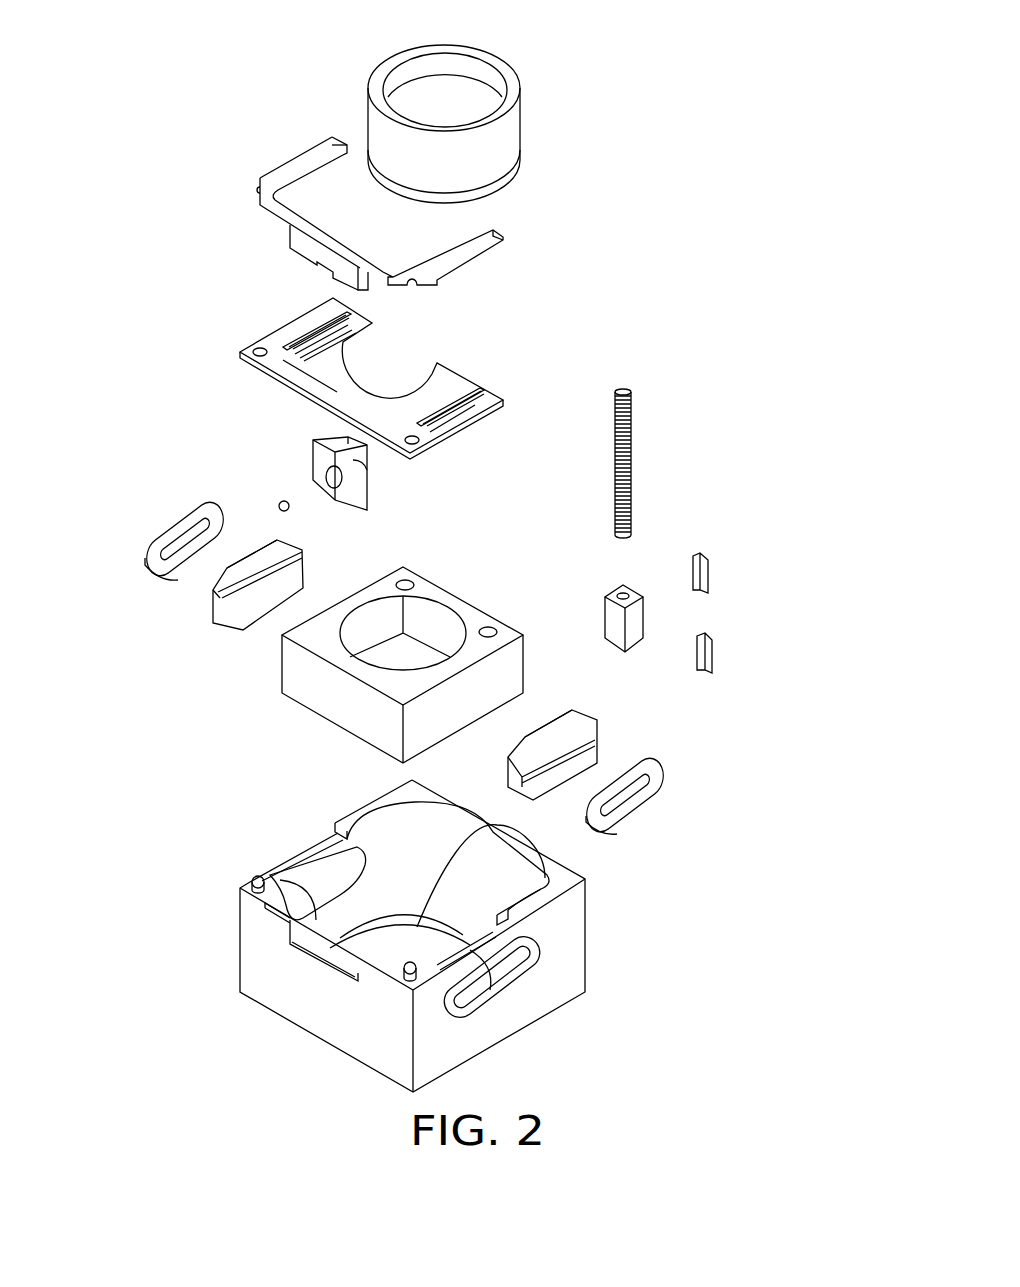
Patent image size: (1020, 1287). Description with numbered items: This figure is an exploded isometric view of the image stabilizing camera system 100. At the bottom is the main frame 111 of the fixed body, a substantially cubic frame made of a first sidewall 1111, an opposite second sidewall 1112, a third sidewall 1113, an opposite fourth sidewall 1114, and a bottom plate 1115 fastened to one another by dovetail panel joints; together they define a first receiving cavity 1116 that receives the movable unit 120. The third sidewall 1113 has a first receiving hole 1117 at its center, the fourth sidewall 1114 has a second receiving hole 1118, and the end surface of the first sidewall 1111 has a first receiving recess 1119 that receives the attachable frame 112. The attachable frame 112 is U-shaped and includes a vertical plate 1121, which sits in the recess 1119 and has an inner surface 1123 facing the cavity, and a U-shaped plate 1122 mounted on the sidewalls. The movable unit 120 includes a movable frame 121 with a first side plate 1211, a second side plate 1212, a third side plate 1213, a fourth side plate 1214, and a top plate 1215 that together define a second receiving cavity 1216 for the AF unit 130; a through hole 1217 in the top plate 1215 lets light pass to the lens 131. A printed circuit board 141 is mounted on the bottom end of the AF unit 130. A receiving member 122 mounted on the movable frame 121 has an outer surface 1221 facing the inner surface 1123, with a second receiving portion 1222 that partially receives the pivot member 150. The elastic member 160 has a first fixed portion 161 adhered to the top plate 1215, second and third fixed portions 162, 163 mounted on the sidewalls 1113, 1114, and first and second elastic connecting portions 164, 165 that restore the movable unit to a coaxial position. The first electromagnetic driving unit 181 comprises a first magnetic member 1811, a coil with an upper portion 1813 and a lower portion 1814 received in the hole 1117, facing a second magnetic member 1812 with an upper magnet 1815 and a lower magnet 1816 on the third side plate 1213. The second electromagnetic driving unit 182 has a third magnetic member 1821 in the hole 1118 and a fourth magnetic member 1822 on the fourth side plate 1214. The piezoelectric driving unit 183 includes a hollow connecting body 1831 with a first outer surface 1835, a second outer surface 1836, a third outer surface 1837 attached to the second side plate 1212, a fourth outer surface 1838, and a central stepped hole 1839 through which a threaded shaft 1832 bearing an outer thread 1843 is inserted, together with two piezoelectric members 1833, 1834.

The image stabilizing camera system 100 is at (677, 92).
The auto-focus (AF) unit 130 is at (512, 130).
The lens 131 is at (470, 95).
The printed circuit board 141 is at (512, 168).
The attachable frame 112 is at (355, 227).
The vertical plate 1121 is at (300, 238).
The U-shaped plate 1122 is at (290, 160).
The inner surface 1123 is at (372, 288).
The elastic member 160 is at (372, 374).
The first fixed portion 161 is at (348, 392).
The second fixed portion 162 is at (470, 398).
The third fixed portion 163 is at (300, 320).
The first elastic connecting portion 164 is at (430, 440).
The second elastic connecting portion 165 is at (275, 338).
The movable unit 120 is at (450, 462).
The movable frame 121 is at (350, 640).
The first side plate 1211 is at (305, 688).
The second side plate 1212 is at (470, 604).
The third side plate 1213 is at (458, 725).
The fourth side plate 1214 is at (282, 640).
The top plate 1215 is at (400, 660).
The second receiving cavity 1216 is at (385, 655).
The through hole 1217 is at (396, 578).
The receiving member 122 is at (376, 479).
The outer surface 1221 is at (352, 497).
The second receiving portion 1222 is at (327, 472).
The pivot member 150 is at (279, 505).
The second electromagnetic driving unit 182 is at (180, 567).
The third magnetic member 1821 is at (163, 575).
The fourth magnetic member 1822 is at (238, 614).
The piezoelectric driving unit 183 is at (675, 533).
The threaded shaft 1832 is at (670, 459).
The outer thread 1843 is at (634, 468).
The hollow connecting body 1831 is at (619, 610).
The first outer surface 1835 is at (646, 614).
The second outer surface 1836 is at (651, 666).
The third outer surface 1837 is at (608, 625).
The fourth outer surface 1838 is at (614, 592).
The stepped hole 1839 is at (625, 594).
The piezoelectric member 1833 is at (702, 562).
The piezoelectric member 1834 is at (735, 653).
The first electromagnetic driving unit 181 is at (663, 767).
The second magnetic member 1812 is at (630, 748).
The upper magnet 1815 is at (585, 722).
The lower magnet 1816 is at (588, 750).
The first magnetic member 1811 is at (685, 795).
The upper portion 1813 is at (670, 781).
The lower portion 1814 is at (638, 812).
The main frame 111 is at (383, 936).
The first sidewall 1111 is at (280, 970).
The second sidewall 1112 is at (390, 935).
The third sidewall 1113 is at (428, 1045).
The fourth sidewall 1114 is at (258, 888).
The bottom plate 1115 is at (417, 927).
The first receiving cavity 1116 is at (510, 880).
The first receiving hole 1117 is at (505, 980).
The second receiving hole 1118 is at (332, 880).
The first receiving recess 1119 is at (283, 890).